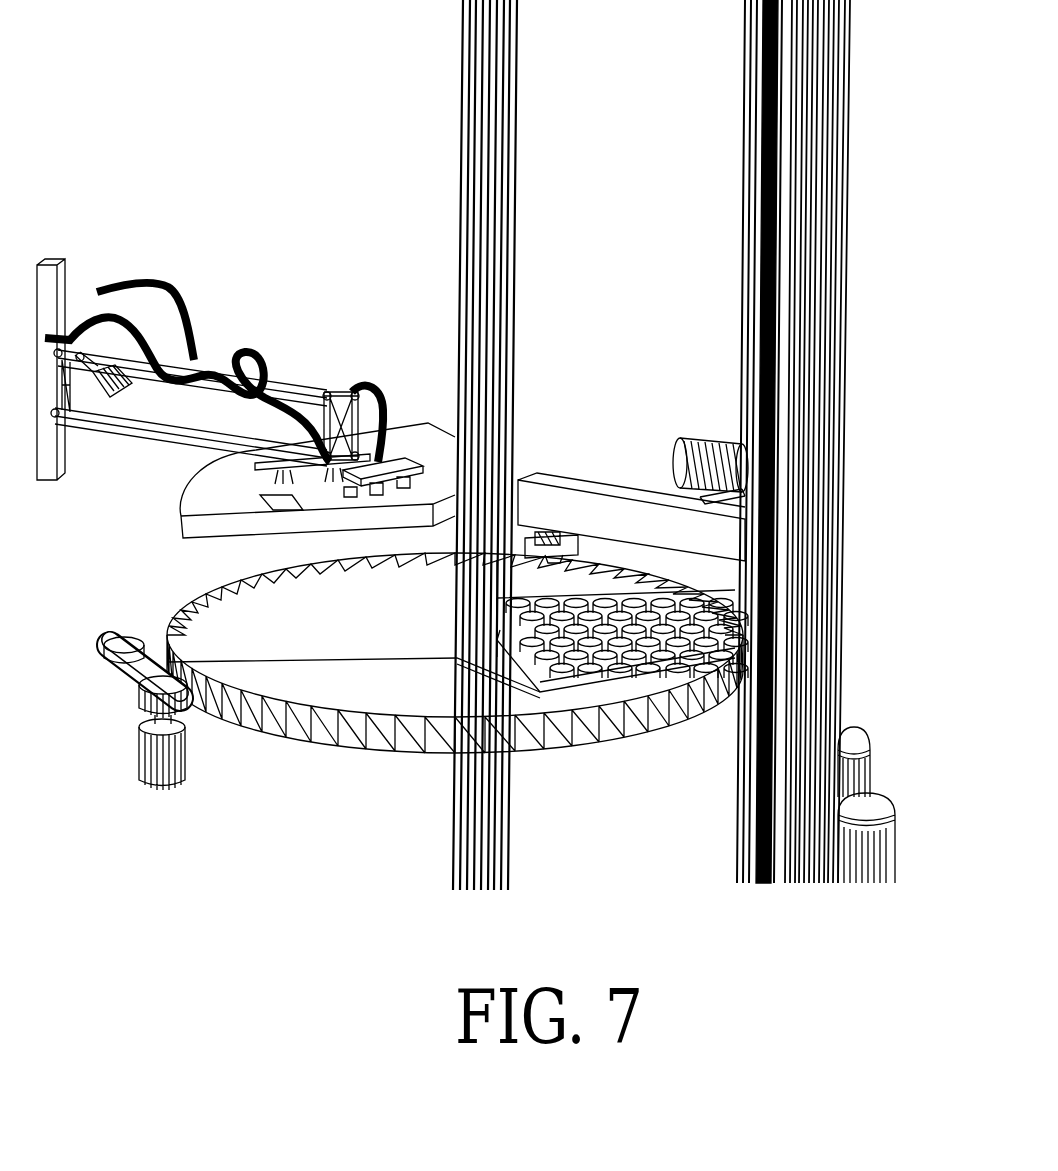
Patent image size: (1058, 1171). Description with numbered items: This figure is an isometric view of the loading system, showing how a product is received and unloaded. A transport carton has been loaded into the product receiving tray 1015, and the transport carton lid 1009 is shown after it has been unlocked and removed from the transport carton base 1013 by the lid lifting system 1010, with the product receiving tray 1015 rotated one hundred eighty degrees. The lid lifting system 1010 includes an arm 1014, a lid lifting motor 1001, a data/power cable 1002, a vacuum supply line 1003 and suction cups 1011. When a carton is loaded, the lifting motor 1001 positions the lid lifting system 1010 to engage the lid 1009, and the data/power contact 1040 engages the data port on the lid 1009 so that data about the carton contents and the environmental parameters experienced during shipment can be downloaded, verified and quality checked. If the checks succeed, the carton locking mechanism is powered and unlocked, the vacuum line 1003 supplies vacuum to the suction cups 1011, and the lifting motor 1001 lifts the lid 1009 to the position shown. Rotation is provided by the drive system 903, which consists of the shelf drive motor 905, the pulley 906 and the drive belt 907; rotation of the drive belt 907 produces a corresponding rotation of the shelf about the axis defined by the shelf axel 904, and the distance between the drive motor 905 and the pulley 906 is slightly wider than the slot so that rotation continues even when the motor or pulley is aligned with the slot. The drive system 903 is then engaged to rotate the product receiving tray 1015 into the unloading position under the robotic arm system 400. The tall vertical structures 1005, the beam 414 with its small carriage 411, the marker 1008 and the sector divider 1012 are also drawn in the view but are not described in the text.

The robotic arm system 400 is at (707, 497).
The carriage 411 is at (537, 530).
The beam 414 is at (610, 497).
The drive system 903 is at (133, 717).
The shelf axel 904 is at (482, 807).
The shelf drive motor 905 is at (187, 772).
The pulley 906 is at (112, 640).
The drive belt 907 is at (122, 677).
The lid lifting motor 1001 is at (118, 370).
The data/power cable 1002 is at (160, 285).
The vacuum supply line 1003 is at (105, 340).
The support column 1005 is at (780, 385).
The marker 1008 is at (297, 512).
The transport carton lid 1009 is at (222, 520).
The lid lifting system 1010 is at (183, 438).
The suction cups 1011 is at (287, 468).
The sector divider 1012 is at (278, 664).
The transport carton base 1013 is at (610, 700).
The arm 1014 is at (347, 393).
The product receiving tray 1015 is at (410, 740).
The data/power contact 1040 is at (405, 460).